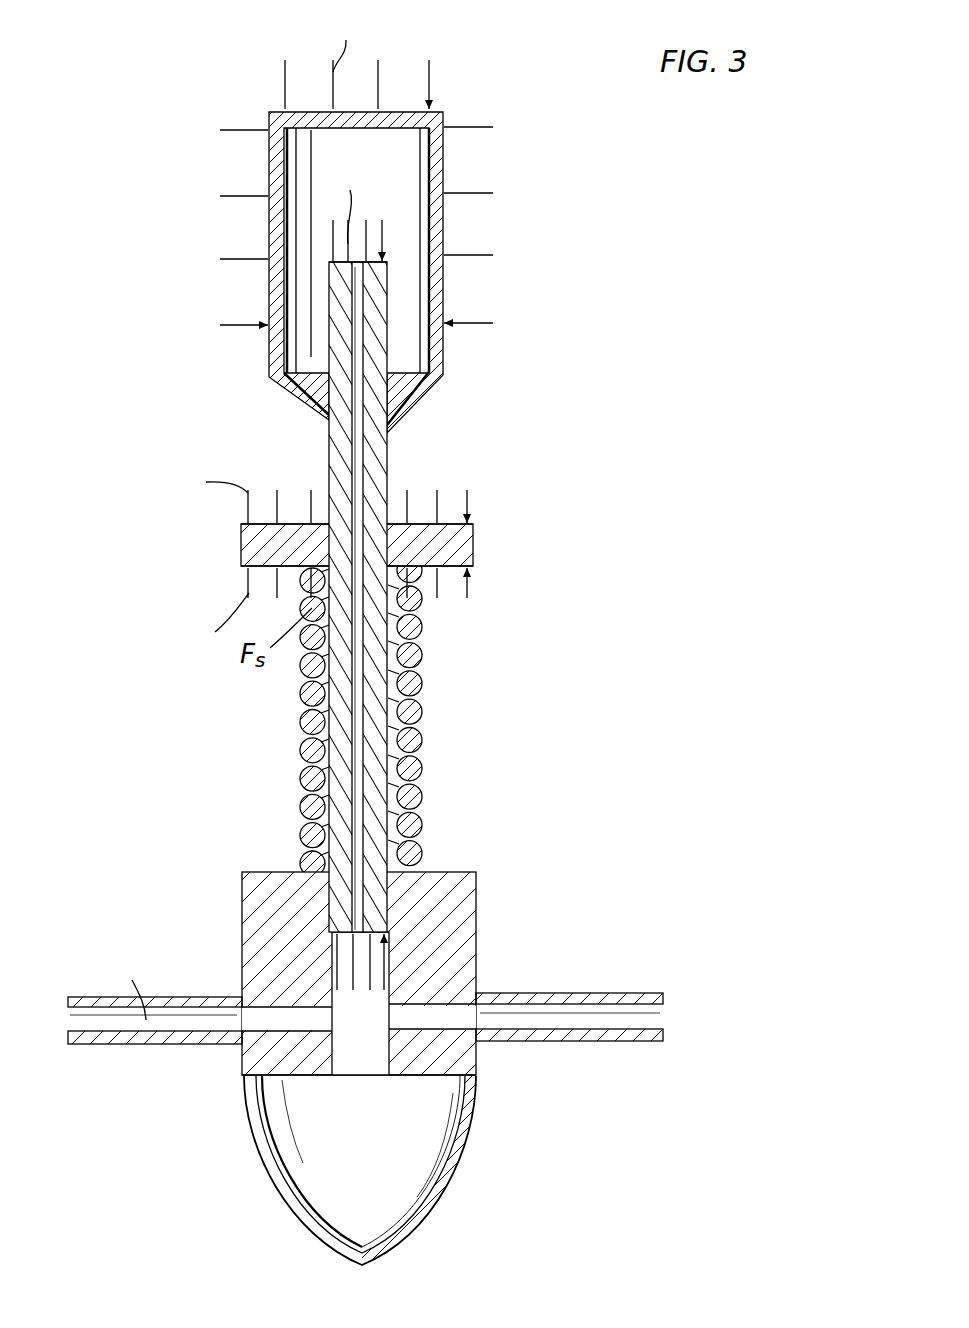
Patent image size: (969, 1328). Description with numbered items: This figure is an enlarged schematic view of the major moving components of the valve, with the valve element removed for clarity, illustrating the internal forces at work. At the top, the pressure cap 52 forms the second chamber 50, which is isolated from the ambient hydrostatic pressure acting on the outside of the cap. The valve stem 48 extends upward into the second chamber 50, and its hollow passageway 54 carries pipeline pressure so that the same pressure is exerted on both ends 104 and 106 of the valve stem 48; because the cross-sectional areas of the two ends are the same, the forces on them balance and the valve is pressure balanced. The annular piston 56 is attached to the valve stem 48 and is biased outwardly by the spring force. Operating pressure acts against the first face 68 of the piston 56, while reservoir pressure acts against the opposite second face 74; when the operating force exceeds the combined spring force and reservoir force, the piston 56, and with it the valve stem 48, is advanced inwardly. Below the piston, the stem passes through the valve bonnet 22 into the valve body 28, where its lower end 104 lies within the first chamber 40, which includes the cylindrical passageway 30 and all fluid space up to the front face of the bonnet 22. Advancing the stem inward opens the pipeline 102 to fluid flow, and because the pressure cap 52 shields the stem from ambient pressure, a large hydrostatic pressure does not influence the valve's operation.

The pressure cap 52 is at (268, 163).
The end of the valve stem 106 is at (327, 263).
The second chamber 50 is at (403, 173).
The valve stem 48 is at (308, 577).
The hollow passageway 54 is at (362, 460).
The annular piston 56 is at (245, 548).
The first face of the piston 68 is at (473, 524).
The second face of the piston 74 is at (246, 568).
The valve bonnet 22 is at (301, 959).
The valve body 28 is at (242, 888).
The end of the valve stem 104 is at (392, 935).
The pipeline 102 is at (80, 997).
The cylindrical passageway 30 is at (466, 1018).
The first chamber 40 is at (376, 1150).